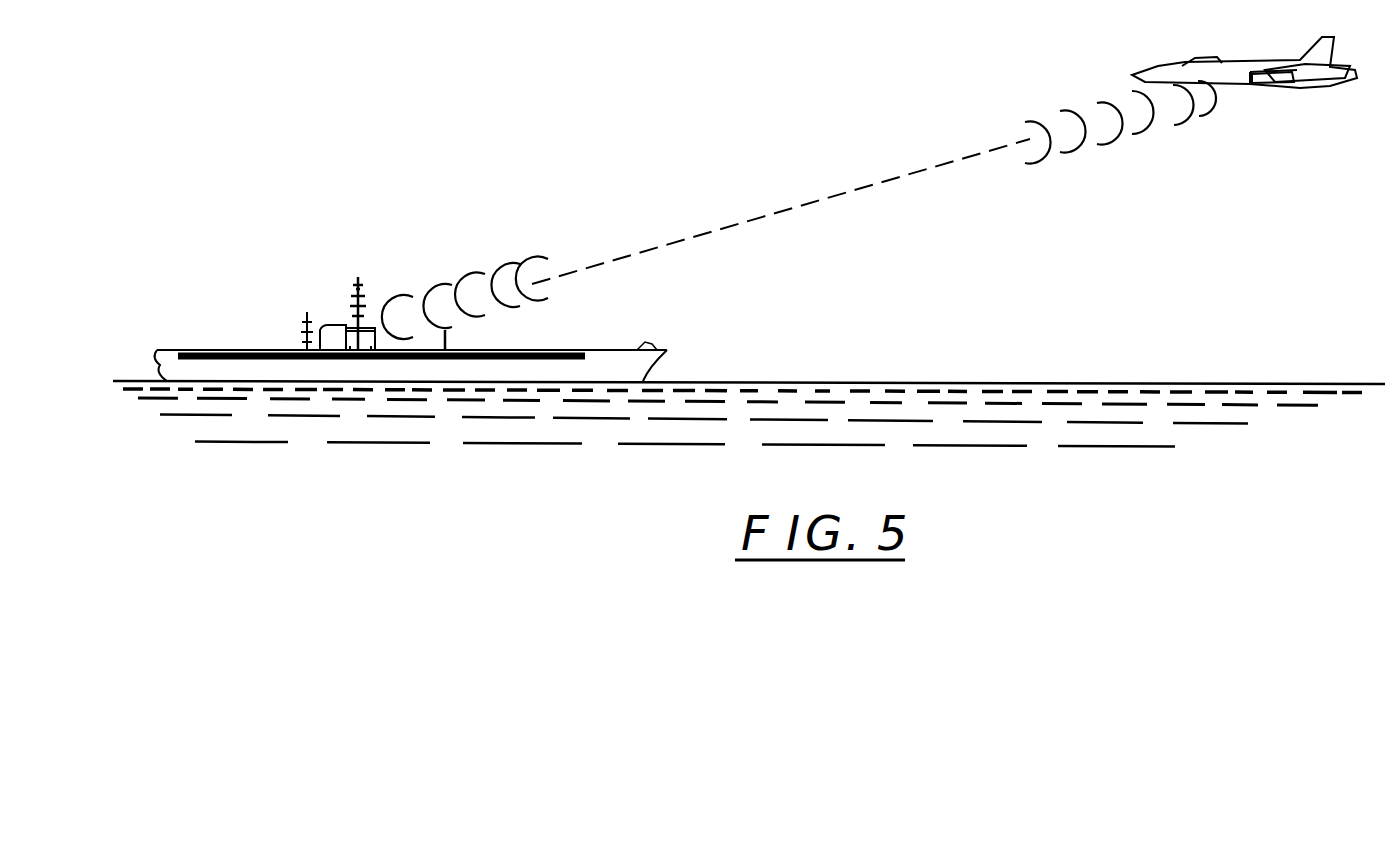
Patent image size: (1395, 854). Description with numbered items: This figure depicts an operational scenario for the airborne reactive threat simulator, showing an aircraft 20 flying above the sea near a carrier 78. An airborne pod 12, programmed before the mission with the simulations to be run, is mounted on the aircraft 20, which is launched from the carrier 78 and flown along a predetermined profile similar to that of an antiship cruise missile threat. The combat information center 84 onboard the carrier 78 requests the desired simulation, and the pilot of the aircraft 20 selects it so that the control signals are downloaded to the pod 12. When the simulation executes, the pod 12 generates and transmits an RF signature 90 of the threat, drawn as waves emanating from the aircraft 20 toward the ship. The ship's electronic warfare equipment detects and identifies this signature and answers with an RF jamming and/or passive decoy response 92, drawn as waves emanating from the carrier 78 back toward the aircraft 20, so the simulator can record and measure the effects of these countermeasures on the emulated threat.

The carrier 78 is at (652, 346).
The combat information center 84 is at (368, 320).
The RF jamming and/or passive decoy response 92 is at (533, 270).
The RF signature 90 is at (1024, 140).
The aircraft 20 is at (1188, 60).
The airborne pod 12 is at (1258, 84).